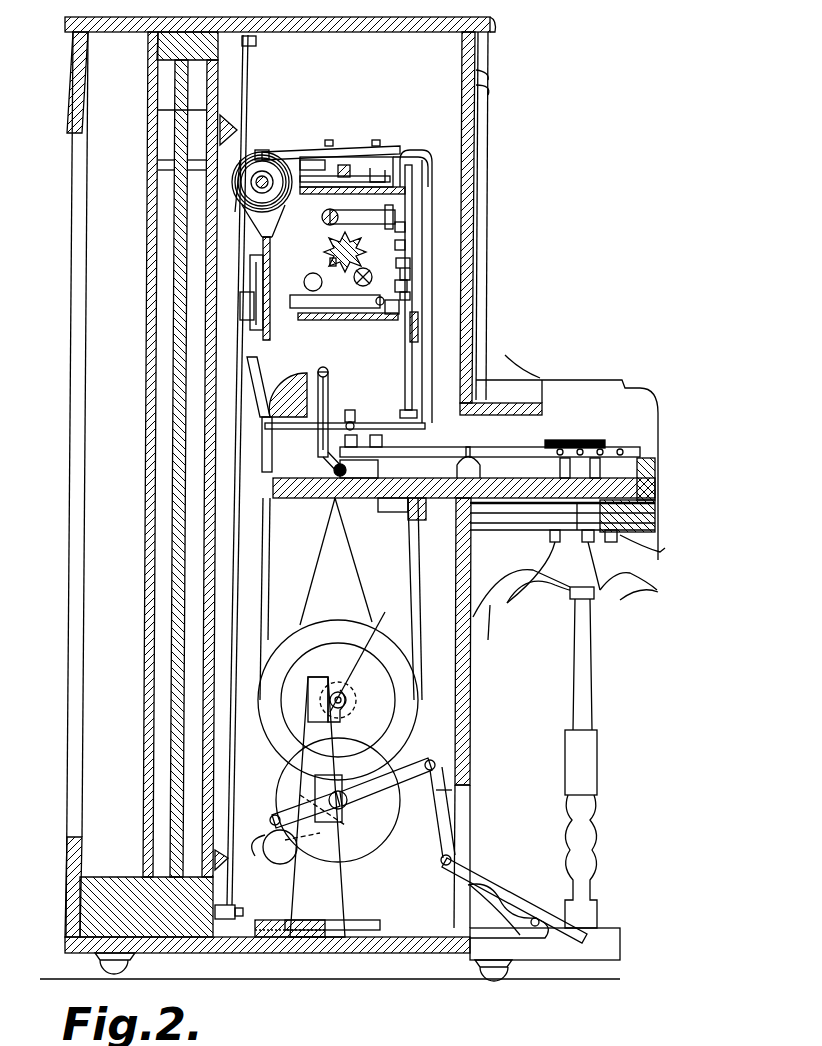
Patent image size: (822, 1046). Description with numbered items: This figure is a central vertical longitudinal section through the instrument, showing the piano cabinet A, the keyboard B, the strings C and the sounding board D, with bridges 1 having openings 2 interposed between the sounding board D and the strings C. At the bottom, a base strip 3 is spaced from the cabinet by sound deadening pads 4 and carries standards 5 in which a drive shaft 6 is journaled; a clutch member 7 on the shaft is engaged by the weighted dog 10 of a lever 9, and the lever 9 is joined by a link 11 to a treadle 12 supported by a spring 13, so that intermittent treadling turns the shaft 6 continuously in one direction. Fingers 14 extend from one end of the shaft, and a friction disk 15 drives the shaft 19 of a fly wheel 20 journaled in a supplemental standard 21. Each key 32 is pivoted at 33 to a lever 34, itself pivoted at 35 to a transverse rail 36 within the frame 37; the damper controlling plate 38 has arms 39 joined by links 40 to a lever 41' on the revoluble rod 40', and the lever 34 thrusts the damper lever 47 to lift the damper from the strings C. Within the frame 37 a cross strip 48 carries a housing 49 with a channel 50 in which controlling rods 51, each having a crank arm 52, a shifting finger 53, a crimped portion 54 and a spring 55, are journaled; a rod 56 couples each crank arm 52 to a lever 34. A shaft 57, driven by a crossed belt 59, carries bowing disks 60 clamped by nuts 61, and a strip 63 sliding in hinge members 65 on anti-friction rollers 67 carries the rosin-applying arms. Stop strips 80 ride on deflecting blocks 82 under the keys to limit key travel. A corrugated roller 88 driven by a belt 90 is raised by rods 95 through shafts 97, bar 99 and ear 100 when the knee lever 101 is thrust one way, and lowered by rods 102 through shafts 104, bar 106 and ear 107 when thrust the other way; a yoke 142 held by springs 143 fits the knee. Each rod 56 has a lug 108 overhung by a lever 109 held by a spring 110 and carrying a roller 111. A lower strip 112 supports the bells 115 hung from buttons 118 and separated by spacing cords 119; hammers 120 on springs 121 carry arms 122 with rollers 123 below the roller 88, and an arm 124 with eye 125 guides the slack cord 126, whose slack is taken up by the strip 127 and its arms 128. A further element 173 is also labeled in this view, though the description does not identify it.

The bridge 1 is at (244, 100).
The opening 2 is at (220, 128).
The base strip 3 is at (365, 925).
The pad 4 is at (308, 937).
The standard 5 is at (335, 895).
The drive shaft 6 is at (380, 780).
The clutch member 7 is at (355, 760).
The lever 9 is at (435, 812).
The weighted dog 10 is at (290, 805).
The link 11 is at (450, 810).
The treadle 12 is at (500, 895).
The spring 13 is at (490, 905).
The finger 14 is at (332, 790).
The friction disk 15 is at (452, 780).
The shaft 19 is at (366, 646).
The fly wheel 20 is at (410, 680).
The supplemental standard 21 is at (318, 680).
The key 32 is at (505, 456).
The pivotal connection 33 is at (355, 422).
The lever 34 is at (340, 423).
The pivotal connection 35 is at (318, 440).
The transverse rail 36 is at (265, 445).
The frame 37 is at (413, 385).
The damper controlling plate 38 is at (285, 395).
The arm 39 is at (323, 368).
The link 40 is at (347, 400).
The revoluble rod 40' is at (375, 467).
The lever 41' is at (403, 439).
The damper lever 47 is at (262, 418).
The cross strip 48 is at (436, 172).
The housing 49 is at (342, 165).
The longitudinal channel 50 is at (400, 157).
The controlling rod 51 is at (290, 150).
The crank arm 52 is at (420, 162).
The shifting finger 53 is at (262, 150).
The crimped portion 54 is at (385, 178).
The spring 55 is at (360, 176).
The rod 56 is at (407, 227).
The shaft 57 is at (262, 200).
The crossed belt 59 is at (263, 580).
The bowing disk 60 is at (241, 185).
The nut 61 is at (251, 182).
The strip 63 is at (330, 150).
The hinge member 65 is at (378, 140).
The anti-friction roller 67 is at (303, 163).
The stop strip 80 is at (566, 460).
The deflecting block 82 is at (655, 473).
The corrugated roller 88 is at (335, 252).
The belt 90 is at (330, 536).
The rod 95 is at (457, 470).
The shaft 97 is at (656, 516).
The bar 99 is at (612, 598).
The ear 100 is at (657, 560).
The knee lever 101 is at (510, 620).
The rod 102 is at (378, 505).
The shaft 104 is at (440, 500).
The bar 106 is at (556, 542).
The ear 107 is at (570, 594).
The adjustable lug 108 is at (405, 247).
The lever 109 is at (392, 216).
The spring 110 is at (362, 224).
The antifriction roller 111 is at (337, 217).
The lower strip 112 is at (345, 318).
The bar 115 is at (250, 303).
The button 118 is at (262, 272).
The spacing cord 119 is at (332, 262).
The hammer 120 is at (384, 303).
The spring 121 is at (331, 278).
The arm 122 is at (305, 310).
The roller 123 is at (374, 267).
The arm 124 is at (405, 265).
The eye 125 is at (407, 284).
The cord 126 is at (410, 296).
The strip 127 is at (418, 322).
The arm 128 is at (399, 308).
The knee engaging yoke 142 is at (660, 552).
The spring 143 is at (618, 535).
The plate 173 is at (273, 293).
The piano cabinet A is at (546, 378).
The keyboard B is at (642, 434).
The strings C is at (405, 223).
The sounding board D is at (205, 450).